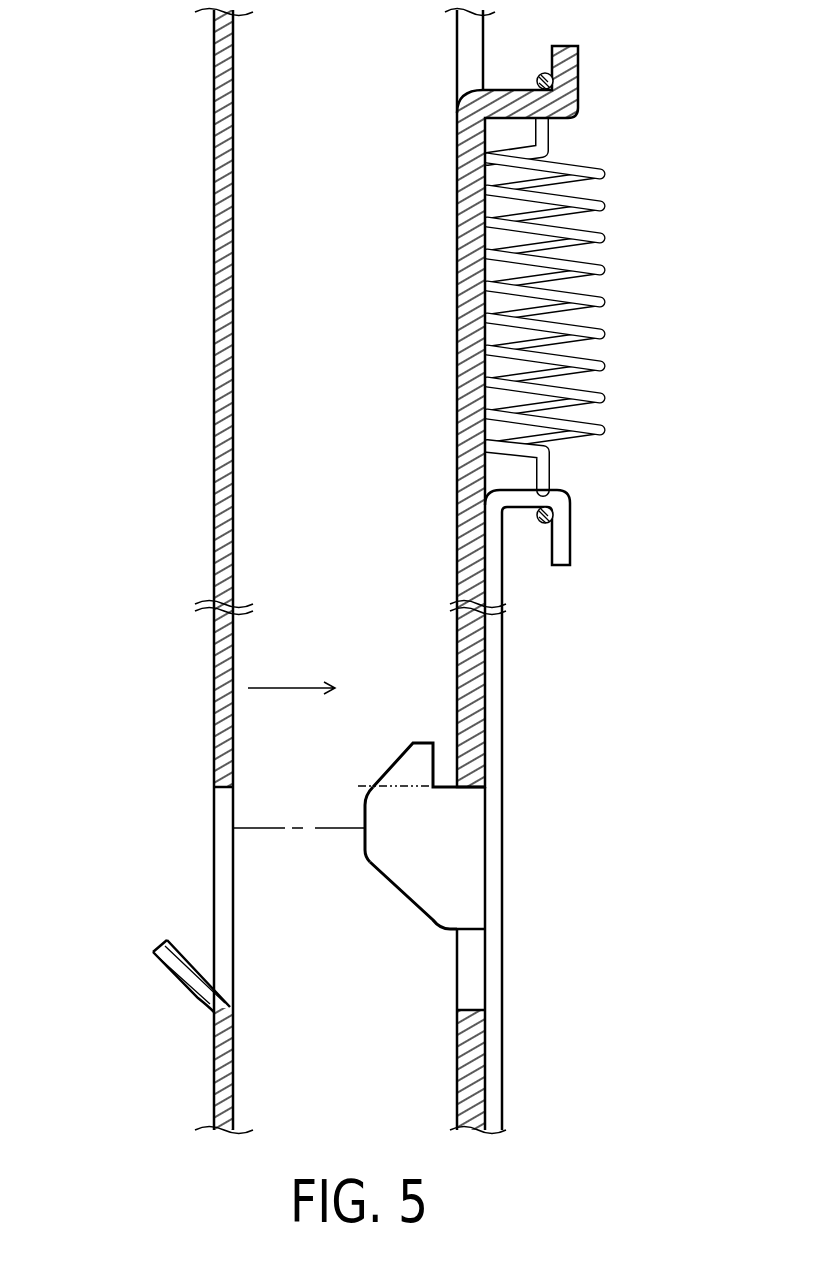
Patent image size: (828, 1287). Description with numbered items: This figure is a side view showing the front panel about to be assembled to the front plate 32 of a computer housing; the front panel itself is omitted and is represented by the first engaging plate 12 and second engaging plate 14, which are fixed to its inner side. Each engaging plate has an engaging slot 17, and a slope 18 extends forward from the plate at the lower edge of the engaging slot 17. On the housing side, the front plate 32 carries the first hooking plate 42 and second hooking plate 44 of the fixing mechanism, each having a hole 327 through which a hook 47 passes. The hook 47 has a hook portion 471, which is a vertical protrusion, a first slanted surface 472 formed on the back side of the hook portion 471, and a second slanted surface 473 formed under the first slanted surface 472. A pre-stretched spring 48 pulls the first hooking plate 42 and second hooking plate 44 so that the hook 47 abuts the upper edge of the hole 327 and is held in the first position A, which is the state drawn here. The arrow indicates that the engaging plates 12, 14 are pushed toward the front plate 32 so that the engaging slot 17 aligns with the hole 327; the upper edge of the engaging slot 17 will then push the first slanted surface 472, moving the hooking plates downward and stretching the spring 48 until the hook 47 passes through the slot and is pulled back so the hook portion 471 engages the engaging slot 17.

The first engaging plate 12 is at (175, 571).
The second engaging plate 14 is at (218, 702).
The engaging slot 17 is at (222, 880).
The slope 18 is at (178, 974).
The front plate 32 is at (468, 648).
The hole 327 is at (468, 967).
The first hooking plate 42 is at (536, 812).
The second hooking plate 44 is at (493, 672).
The hook 47 is at (492, 843).
The hook portion 471 is at (433, 765).
The first slanted surface 472 is at (390, 777).
The second slanted surface 473 is at (481, 900).
The spring 48 is at (601, 277).